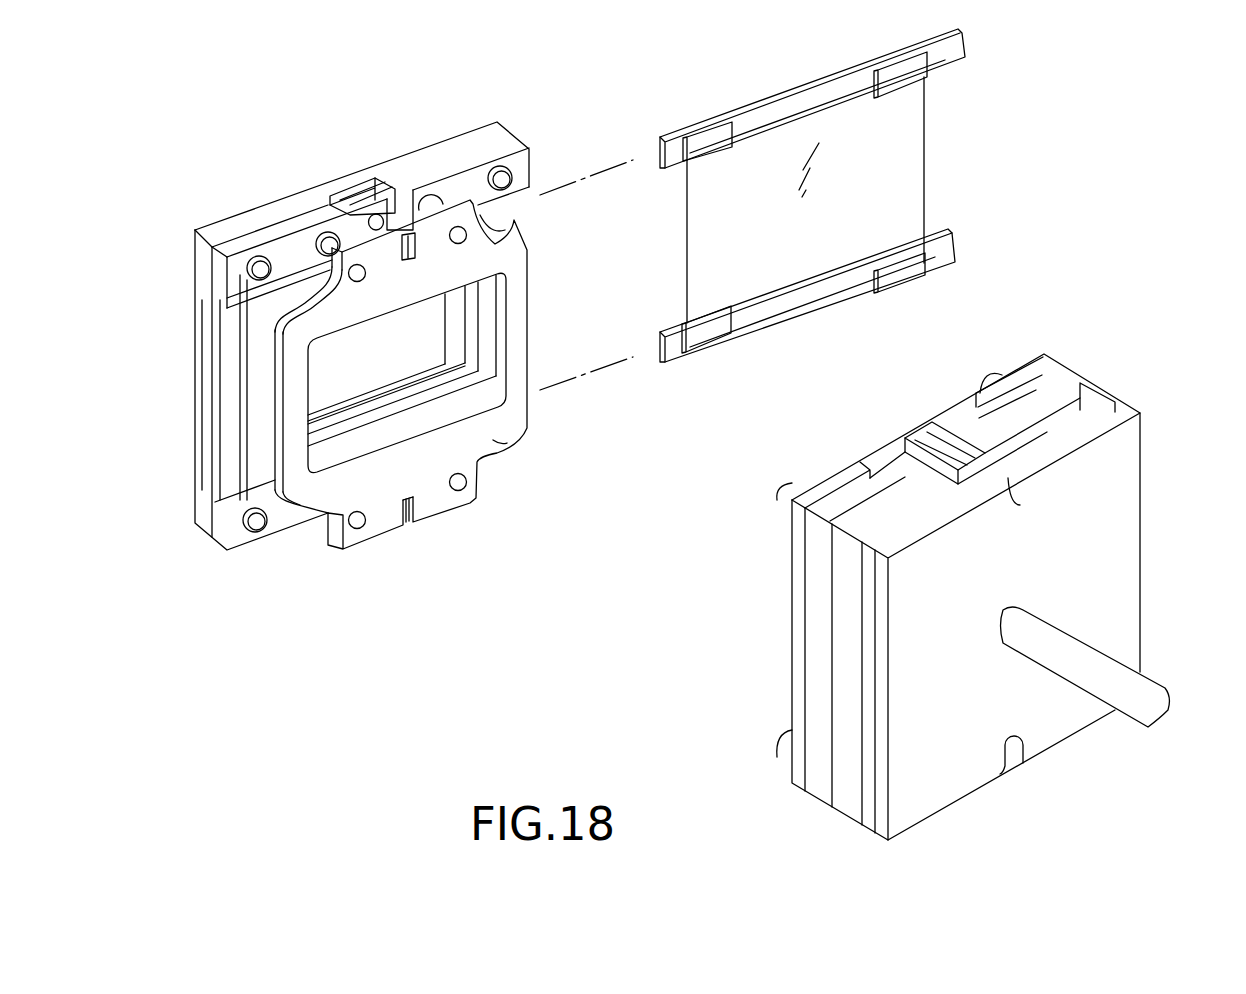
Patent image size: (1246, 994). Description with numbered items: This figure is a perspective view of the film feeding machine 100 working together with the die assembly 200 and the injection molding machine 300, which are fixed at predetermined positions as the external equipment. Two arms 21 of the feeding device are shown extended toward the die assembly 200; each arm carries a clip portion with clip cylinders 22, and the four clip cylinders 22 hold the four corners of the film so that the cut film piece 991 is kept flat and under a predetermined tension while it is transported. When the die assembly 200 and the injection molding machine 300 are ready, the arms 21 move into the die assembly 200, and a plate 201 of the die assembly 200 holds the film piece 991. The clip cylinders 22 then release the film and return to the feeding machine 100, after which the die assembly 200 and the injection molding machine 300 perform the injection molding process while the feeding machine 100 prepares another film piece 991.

The film feeding machine 100 is at (896, 227).
The film piece 991 is at (893, 172).
The arms 21 is at (797, 100).
The clip cylinders 22 is at (713, 140).
The die assembly 200 is at (371, 413).
The plate 201 is at (411, 401).
The injection molding machine 300 is at (1060, 653).